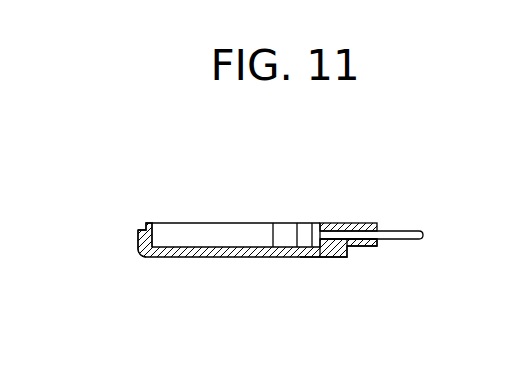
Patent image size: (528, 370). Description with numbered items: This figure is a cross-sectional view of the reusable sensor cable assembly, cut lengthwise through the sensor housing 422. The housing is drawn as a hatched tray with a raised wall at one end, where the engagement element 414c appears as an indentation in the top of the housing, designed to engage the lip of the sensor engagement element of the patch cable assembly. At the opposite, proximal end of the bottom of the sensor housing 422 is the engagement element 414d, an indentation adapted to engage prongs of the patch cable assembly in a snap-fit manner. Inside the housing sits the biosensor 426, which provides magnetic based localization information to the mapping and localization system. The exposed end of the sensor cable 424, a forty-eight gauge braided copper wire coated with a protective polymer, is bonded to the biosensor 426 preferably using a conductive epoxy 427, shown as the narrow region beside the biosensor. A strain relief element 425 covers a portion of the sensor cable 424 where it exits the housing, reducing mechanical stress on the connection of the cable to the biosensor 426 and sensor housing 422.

The engagement element 414c is at (138, 228).
The engagement element 414d is at (356, 250).
The sensor housing 422 is at (272, 250).
The sensor cable 424 is at (406, 229).
The strain relief element 425 is at (347, 222).
The biosensor 426 is at (304, 222).
The conductive epoxy 427 is at (315, 222).